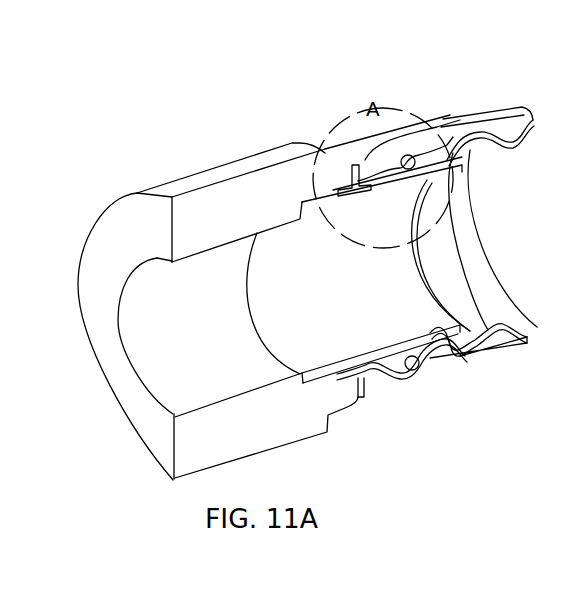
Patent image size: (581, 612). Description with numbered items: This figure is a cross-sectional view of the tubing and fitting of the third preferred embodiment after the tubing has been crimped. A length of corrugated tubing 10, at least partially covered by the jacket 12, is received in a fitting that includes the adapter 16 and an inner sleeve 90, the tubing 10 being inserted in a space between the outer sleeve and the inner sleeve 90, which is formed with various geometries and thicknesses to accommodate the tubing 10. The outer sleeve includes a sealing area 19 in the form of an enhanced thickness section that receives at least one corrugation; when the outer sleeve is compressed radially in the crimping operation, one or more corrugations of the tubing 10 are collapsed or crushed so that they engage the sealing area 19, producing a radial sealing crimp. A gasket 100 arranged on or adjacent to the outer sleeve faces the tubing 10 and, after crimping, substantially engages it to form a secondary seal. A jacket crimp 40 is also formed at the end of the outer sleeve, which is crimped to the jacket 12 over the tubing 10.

The corrugated tubing 10 is at (524, 130).
The jacket 12 is at (485, 116).
The adapter 16 is at (207, 341).
The sealing area 19 is at (340, 170).
The jacket crimp 40 is at (439, 150).
The inner sleeve 90 is at (345, 299).
The gasket 100 is at (421, 365).